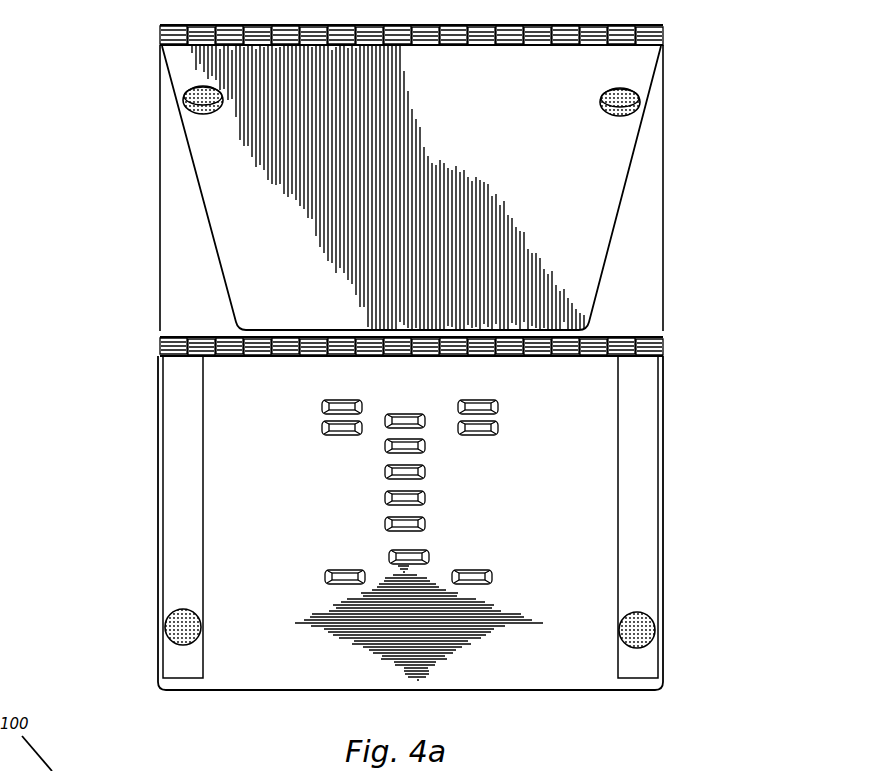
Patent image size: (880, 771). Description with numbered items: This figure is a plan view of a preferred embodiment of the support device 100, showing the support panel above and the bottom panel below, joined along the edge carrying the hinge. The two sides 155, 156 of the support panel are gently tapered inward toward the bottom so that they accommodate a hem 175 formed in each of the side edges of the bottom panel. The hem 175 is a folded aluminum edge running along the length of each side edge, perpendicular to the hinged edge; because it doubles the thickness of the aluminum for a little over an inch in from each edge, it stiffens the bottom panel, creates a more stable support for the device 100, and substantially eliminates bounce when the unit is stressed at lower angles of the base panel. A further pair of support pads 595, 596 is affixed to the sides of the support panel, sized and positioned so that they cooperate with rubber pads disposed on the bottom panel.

The electronic device 100 is at (110, 76).
The side of the support panel 155 is at (205, 208).
The side of the support panel 156 is at (623, 180).
The support pad 595 is at (195, 106).
The support pad 596 is at (640, 98).
The hem 175 is at (177, 530).